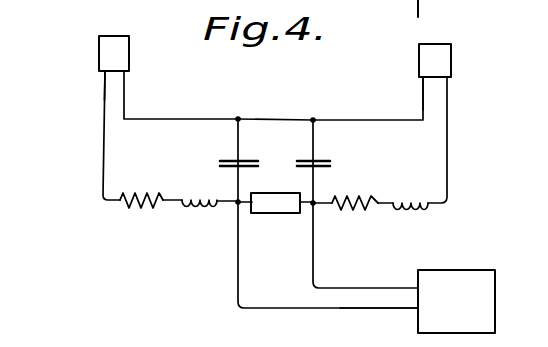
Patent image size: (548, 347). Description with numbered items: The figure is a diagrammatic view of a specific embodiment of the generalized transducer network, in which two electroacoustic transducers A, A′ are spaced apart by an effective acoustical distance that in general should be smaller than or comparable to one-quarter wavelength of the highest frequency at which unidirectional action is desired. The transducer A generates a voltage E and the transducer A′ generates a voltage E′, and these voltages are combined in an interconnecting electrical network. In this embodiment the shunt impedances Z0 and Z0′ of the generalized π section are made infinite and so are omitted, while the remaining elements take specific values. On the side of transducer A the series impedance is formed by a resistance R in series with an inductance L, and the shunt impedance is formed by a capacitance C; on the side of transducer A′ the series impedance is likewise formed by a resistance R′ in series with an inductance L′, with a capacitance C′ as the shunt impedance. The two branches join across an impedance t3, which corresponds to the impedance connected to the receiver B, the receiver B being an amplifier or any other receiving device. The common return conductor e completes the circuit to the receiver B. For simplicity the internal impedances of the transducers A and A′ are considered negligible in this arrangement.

The electroacoustic transducer A is at (111, 53).
The electroacoustic transducer A′ is at (441, 59).
The voltage E is at (114, 85).
The voltage E′ is at (434, 94).
The capacitance C is at (226, 158).
The capacitance C′ is at (327, 157).
The resistance R is at (140, 219).
The inductance L is at (199, 222).
The resistance R′ is at (351, 206).
The inductance L′ is at (413, 210).
The impedance t3 is at (284, 207).
The receiver B is at (478, 302).
The conductor e is at (379, 299).